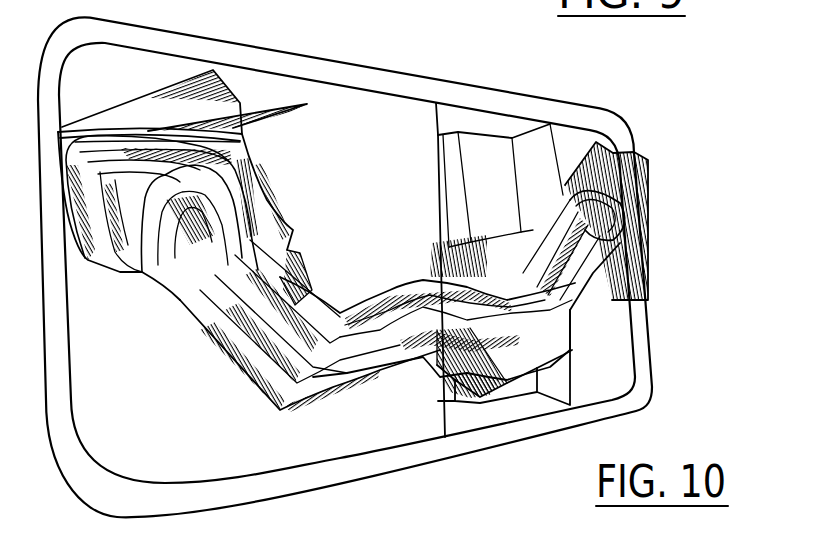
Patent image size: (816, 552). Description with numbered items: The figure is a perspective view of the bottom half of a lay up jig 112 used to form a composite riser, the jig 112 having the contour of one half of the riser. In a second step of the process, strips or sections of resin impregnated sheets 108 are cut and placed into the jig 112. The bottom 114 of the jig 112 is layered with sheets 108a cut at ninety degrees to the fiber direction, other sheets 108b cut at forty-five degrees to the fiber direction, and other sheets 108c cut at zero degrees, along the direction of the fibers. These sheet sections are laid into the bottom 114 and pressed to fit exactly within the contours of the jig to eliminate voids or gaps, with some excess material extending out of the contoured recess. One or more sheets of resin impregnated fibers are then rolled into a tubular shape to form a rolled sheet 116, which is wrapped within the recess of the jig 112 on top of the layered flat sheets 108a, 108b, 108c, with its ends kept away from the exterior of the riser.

The sheets 108 is at (307, 254).
The sheets cut at 90° 108a is at (167, 88).
The sheets cut at 45° 108b is at (277, 107).
The sheets cut at 0° 108c is at (548, 343).
The jig 112 is at (378, 110).
The bottom of the jig 114 is at (157, 468).
The rolled sheet 116 is at (207, 268).